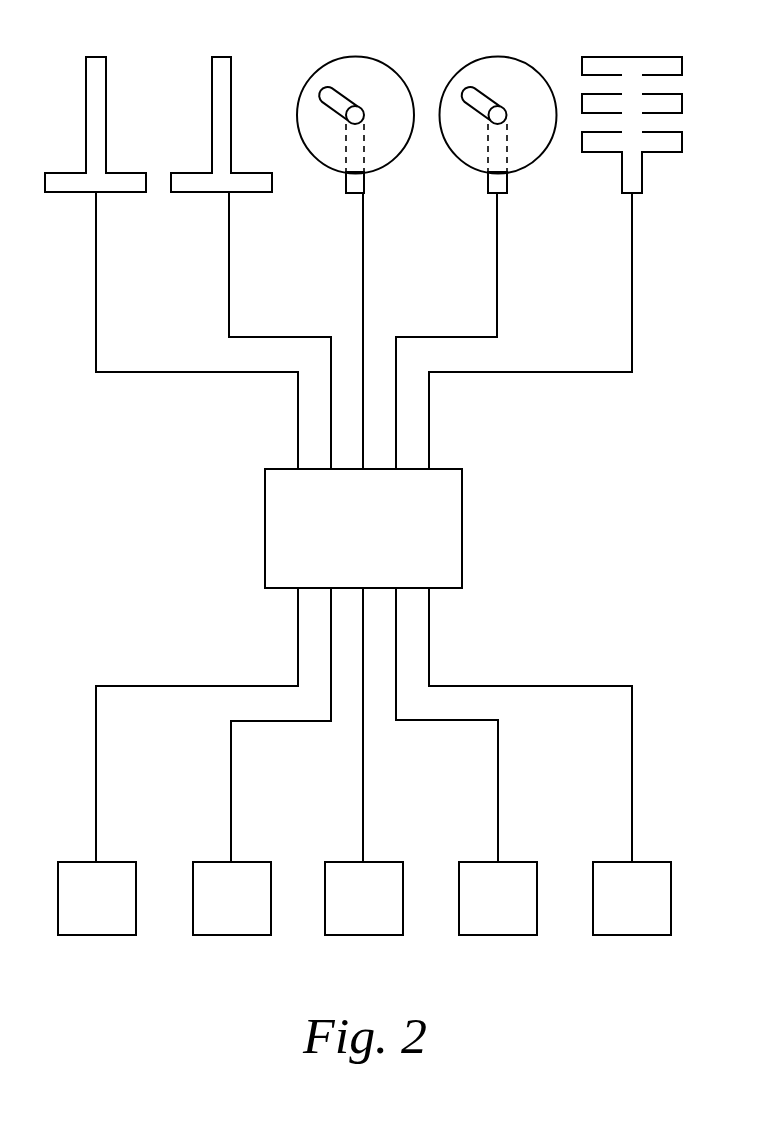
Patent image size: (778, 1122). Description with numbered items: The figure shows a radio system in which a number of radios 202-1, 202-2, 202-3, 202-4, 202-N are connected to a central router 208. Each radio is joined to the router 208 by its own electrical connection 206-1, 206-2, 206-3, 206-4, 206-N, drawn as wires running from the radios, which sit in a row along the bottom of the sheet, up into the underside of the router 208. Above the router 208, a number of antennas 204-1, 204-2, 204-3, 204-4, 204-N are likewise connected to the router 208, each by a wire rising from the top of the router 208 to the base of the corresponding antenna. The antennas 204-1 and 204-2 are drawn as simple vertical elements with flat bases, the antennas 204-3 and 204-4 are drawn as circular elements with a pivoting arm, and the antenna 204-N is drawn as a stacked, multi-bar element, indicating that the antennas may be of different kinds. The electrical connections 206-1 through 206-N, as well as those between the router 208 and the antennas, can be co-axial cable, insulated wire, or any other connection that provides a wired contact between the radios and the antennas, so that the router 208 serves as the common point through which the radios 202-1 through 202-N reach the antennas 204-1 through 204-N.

The radio 202-1 is at (97, 935).
The radio 202-2 is at (231, 935).
The radio 202-3 is at (364, 935).
The radio 202-4 is at (498, 935).
The radio 202-N is at (632, 935).
The antenna 204-1 is at (97, 57).
The antenna 204-2 is at (222, 57).
The antenna 204-3 is at (355, 57).
The antenna 204-4 is at (498, 57).
The antenna 204-N is at (632, 57).
The electrical connection 206-1 is at (97, 790).
The electrical connection 206-2 is at (232, 790).
The electrical connection 206-3 is at (364, 790).
The electrical connection 206-4 is at (499, 790).
The electrical connection 206-N is at (633, 790).
The router 208 is at (463, 531).